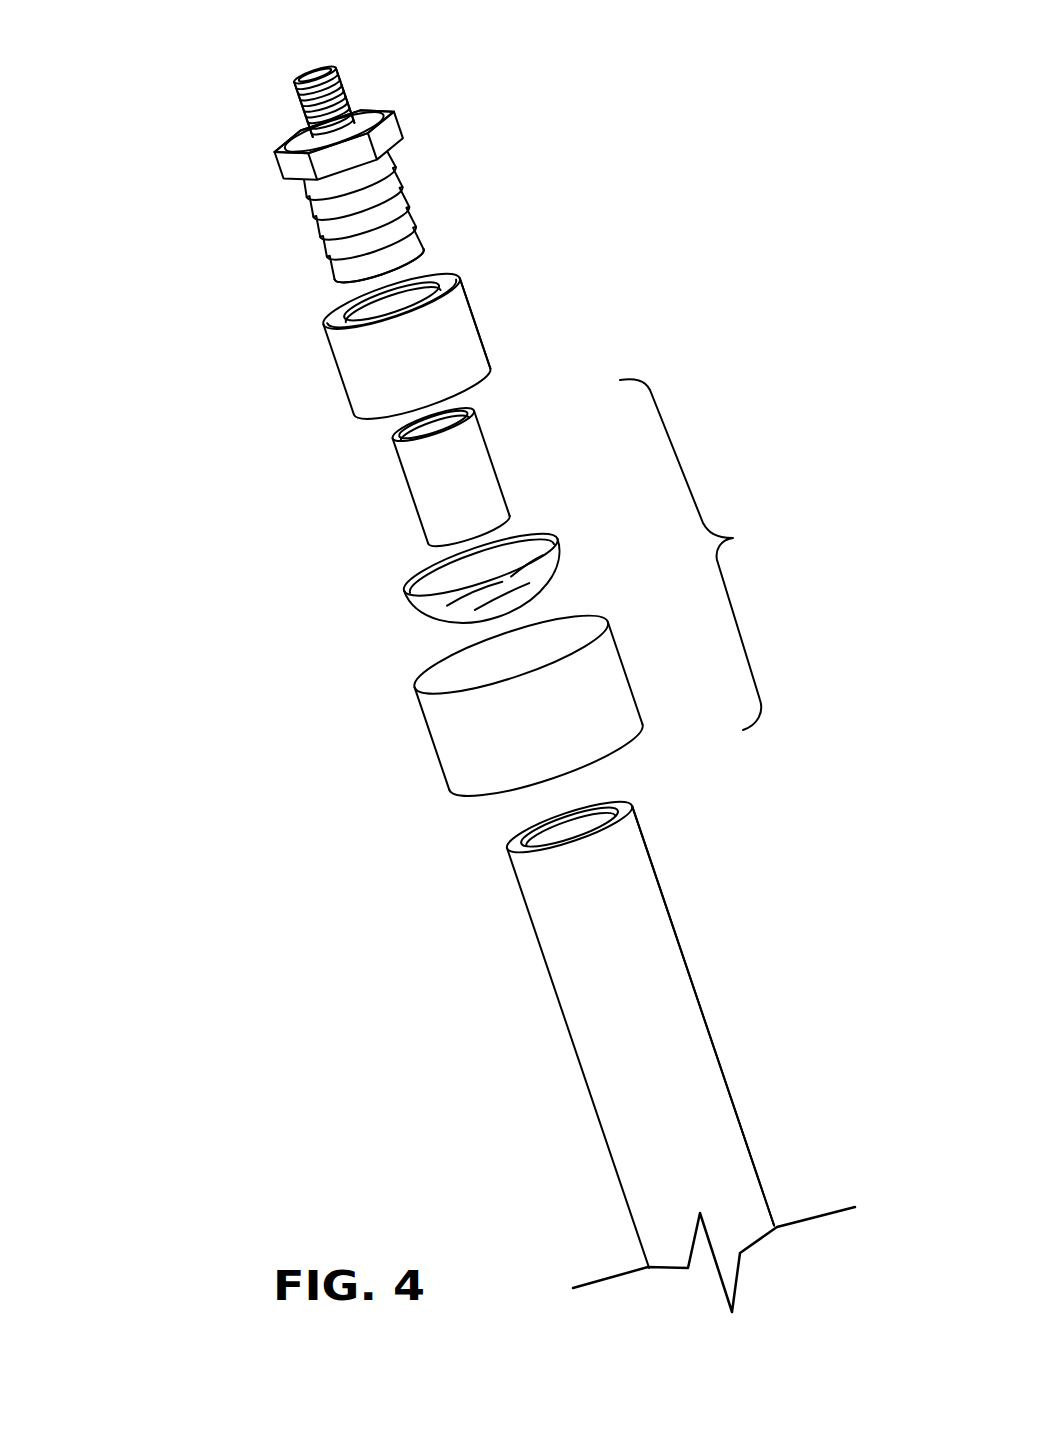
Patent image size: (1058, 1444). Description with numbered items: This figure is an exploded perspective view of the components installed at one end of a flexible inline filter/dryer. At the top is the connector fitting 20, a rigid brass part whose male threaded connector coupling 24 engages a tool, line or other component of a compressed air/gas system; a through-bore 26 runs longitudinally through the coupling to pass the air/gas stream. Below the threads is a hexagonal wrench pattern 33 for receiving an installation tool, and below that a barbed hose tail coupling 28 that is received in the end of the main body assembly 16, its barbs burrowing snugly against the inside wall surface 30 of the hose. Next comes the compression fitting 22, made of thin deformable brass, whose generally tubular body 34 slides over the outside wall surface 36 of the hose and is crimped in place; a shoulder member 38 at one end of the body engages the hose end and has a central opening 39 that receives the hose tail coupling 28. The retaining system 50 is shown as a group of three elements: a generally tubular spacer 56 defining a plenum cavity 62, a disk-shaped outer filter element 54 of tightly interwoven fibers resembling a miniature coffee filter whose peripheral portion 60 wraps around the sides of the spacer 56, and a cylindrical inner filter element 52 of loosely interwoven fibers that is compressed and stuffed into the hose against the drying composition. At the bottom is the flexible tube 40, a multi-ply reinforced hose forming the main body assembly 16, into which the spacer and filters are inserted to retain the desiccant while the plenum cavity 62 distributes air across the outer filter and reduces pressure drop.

The main body assembly 16 is at (538, 1100).
The connector fitting 20 is at (232, 133).
The compression fitting 22 is at (513, 323).
The threaded connector coupling 24 is at (352, 90).
The through-bore 26 is at (315, 68).
The barbed hose tail coupling 28 is at (315, 213).
The inside wall surface 30 is at (578, 805).
The hexagonal wrench pattern 33 is at (297, 162).
The tubular body 34 is at (486, 355).
The outside wall surface 36 is at (560, 922).
The shoulder member 38 is at (336, 310).
The central opening 39 is at (407, 293).
The flexible tube 40 is at (676, 932).
The retaining system 50 is at (696, 554).
The inner filter element 52 is at (437, 758).
The outer filter element 54 is at (415, 612).
The spacer 56 is at (412, 496).
The peripheral portion 60 is at (525, 585).
The plenum cavity 62 is at (400, 431).